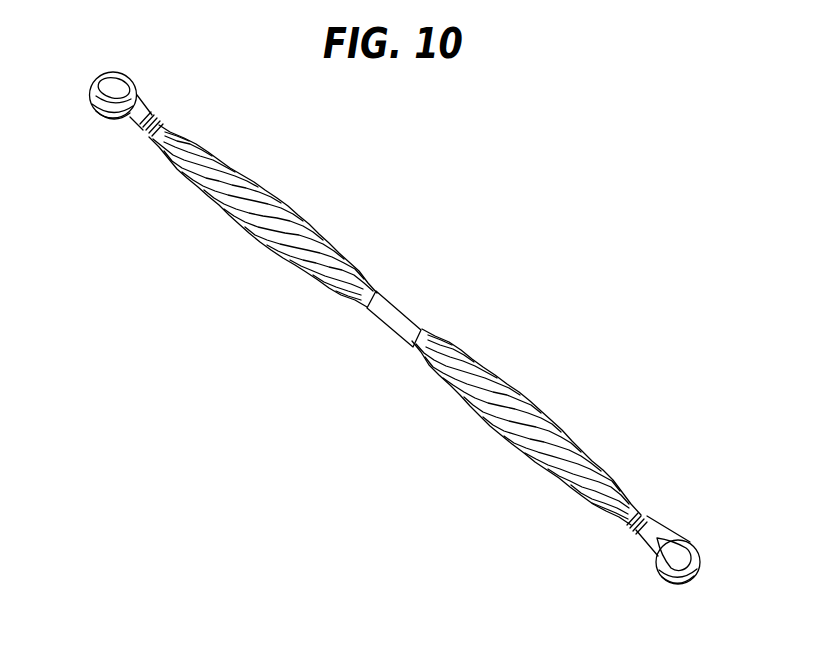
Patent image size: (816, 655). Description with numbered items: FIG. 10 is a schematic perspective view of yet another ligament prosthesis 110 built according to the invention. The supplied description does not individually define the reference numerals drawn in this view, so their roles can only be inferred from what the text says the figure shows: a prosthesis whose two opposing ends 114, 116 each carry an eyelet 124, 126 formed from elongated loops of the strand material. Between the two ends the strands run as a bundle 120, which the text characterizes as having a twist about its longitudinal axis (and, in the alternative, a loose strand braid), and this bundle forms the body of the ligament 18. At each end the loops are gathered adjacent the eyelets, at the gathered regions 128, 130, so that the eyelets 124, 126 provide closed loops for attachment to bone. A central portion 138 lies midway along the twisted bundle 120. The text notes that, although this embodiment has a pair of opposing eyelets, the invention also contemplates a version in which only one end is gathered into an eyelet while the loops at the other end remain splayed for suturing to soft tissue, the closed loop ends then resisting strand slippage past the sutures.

The cable assembly 110 is at (490, 236).
The first end loop portion 114 is at (98, 50).
The second end loop portion 116 is at (742, 600).
The cable 18 is at (140, 167).
The twisted cable body 120 is at (262, 188).
The first eye loop 124 is at (90, 100).
The second eye loop 126 is at (675, 588).
The first wrap 128 is at (157, 117).
The second wrap 130 is at (646, 518).
The sleeve 138 is at (403, 313).